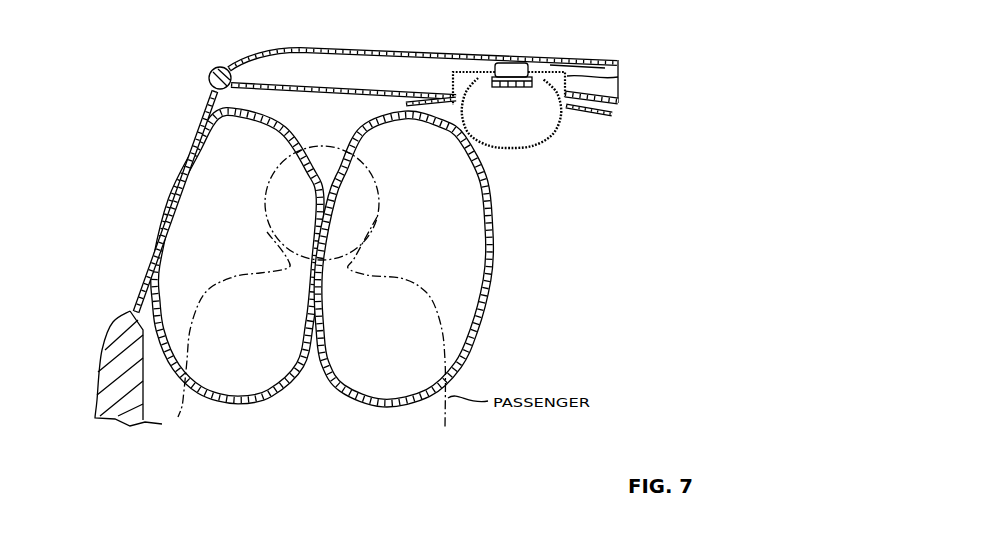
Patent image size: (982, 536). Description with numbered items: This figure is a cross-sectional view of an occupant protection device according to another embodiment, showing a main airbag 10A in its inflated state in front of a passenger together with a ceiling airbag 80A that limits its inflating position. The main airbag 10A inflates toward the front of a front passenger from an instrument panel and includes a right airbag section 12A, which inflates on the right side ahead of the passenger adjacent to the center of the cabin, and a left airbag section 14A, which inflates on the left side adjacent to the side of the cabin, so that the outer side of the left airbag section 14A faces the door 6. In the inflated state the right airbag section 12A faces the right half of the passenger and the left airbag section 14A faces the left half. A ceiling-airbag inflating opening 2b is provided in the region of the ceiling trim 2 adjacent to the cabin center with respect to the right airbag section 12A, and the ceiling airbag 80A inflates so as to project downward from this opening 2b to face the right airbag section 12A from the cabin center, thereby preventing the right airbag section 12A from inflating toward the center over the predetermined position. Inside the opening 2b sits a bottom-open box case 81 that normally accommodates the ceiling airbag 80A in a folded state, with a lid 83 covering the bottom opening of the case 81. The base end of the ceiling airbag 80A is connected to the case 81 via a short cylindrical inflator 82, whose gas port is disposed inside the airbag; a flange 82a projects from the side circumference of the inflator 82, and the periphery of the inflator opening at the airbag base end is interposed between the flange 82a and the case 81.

The ceiling trim 2 is at (316, 86).
The ceiling-airbag inflating opening 2b is at (568, 63).
The door 6 is at (136, 260).
The main airbag 10A is at (410, 296).
The right airbag section 12A is at (486, 236).
The left airbag section 14A is at (227, 403).
The ceiling airbag 80A is at (550, 147).
The case 81 is at (618, 74).
The inflator 82 is at (509, 63).
The flange 82a is at (519, 87).
The lid 83 is at (406, 105).